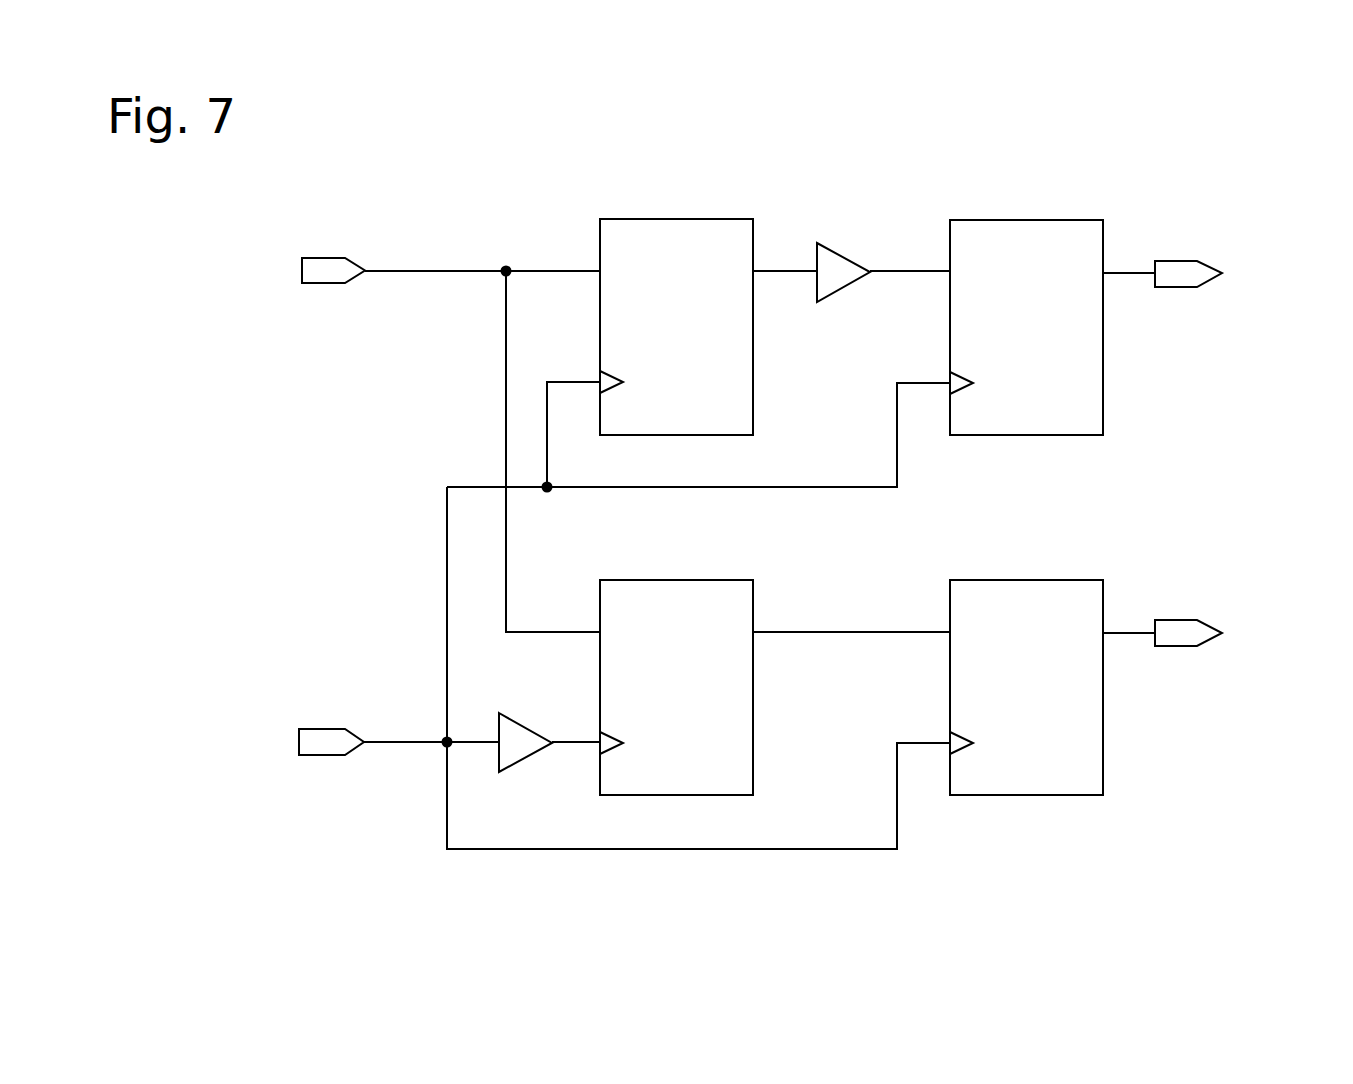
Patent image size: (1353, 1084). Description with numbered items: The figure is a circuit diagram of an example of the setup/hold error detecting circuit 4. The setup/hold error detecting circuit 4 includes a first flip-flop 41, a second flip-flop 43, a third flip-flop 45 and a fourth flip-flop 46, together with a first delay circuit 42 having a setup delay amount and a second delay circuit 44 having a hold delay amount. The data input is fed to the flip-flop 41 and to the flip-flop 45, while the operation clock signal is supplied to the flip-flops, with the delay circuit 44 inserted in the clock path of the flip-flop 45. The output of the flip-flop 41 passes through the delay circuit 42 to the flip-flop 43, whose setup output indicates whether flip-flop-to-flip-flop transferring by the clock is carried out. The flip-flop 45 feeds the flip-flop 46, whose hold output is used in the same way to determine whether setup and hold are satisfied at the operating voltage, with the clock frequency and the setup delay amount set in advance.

The setup/hold error detecting circuit 4 is at (1133, 921).
The flip-flop 41 is at (712, 219).
The delay circuit 42 is at (842, 248).
The flip-flop 43 is at (1065, 220).
The delay circuit 44 is at (524, 723).
The flip-flop 45 is at (714, 580).
The flip-flop 46 is at (1059, 580).